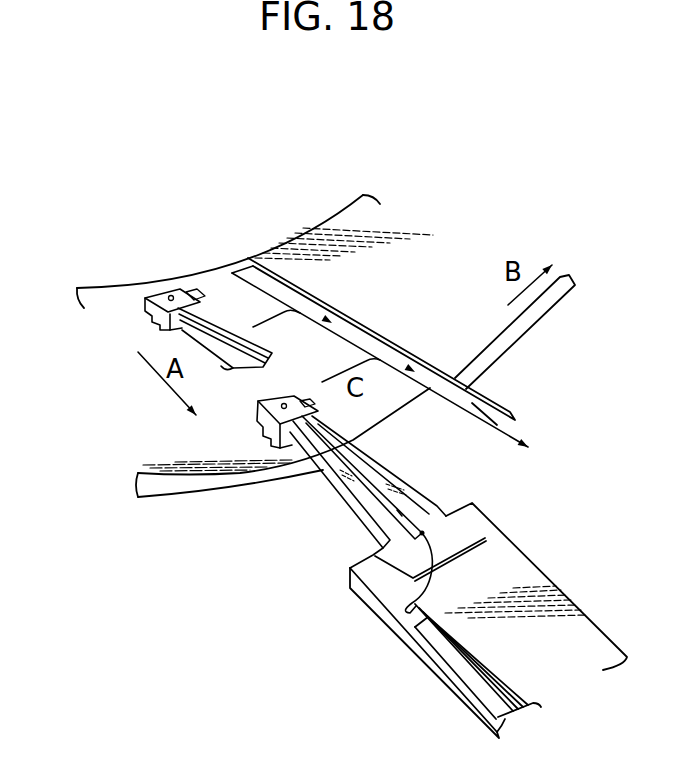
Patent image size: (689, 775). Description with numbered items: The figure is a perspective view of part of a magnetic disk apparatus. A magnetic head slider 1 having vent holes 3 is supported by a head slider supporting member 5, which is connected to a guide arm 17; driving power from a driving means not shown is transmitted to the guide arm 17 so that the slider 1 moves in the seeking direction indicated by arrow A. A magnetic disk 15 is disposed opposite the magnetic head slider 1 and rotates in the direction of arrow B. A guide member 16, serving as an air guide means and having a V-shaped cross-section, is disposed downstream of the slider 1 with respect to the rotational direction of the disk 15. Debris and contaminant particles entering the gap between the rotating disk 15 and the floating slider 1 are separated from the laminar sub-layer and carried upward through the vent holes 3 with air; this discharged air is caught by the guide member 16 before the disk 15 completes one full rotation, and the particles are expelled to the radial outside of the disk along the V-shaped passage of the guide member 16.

The magnetic head slider 1 is at (144, 310).
The vent holes 3 is at (173, 296).
The head slider supporting member 5 is at (408, 490).
The magnetic disk 15 is at (528, 322).
The guide member 16 is at (497, 403).
The guide arm 17 is at (525, 578).